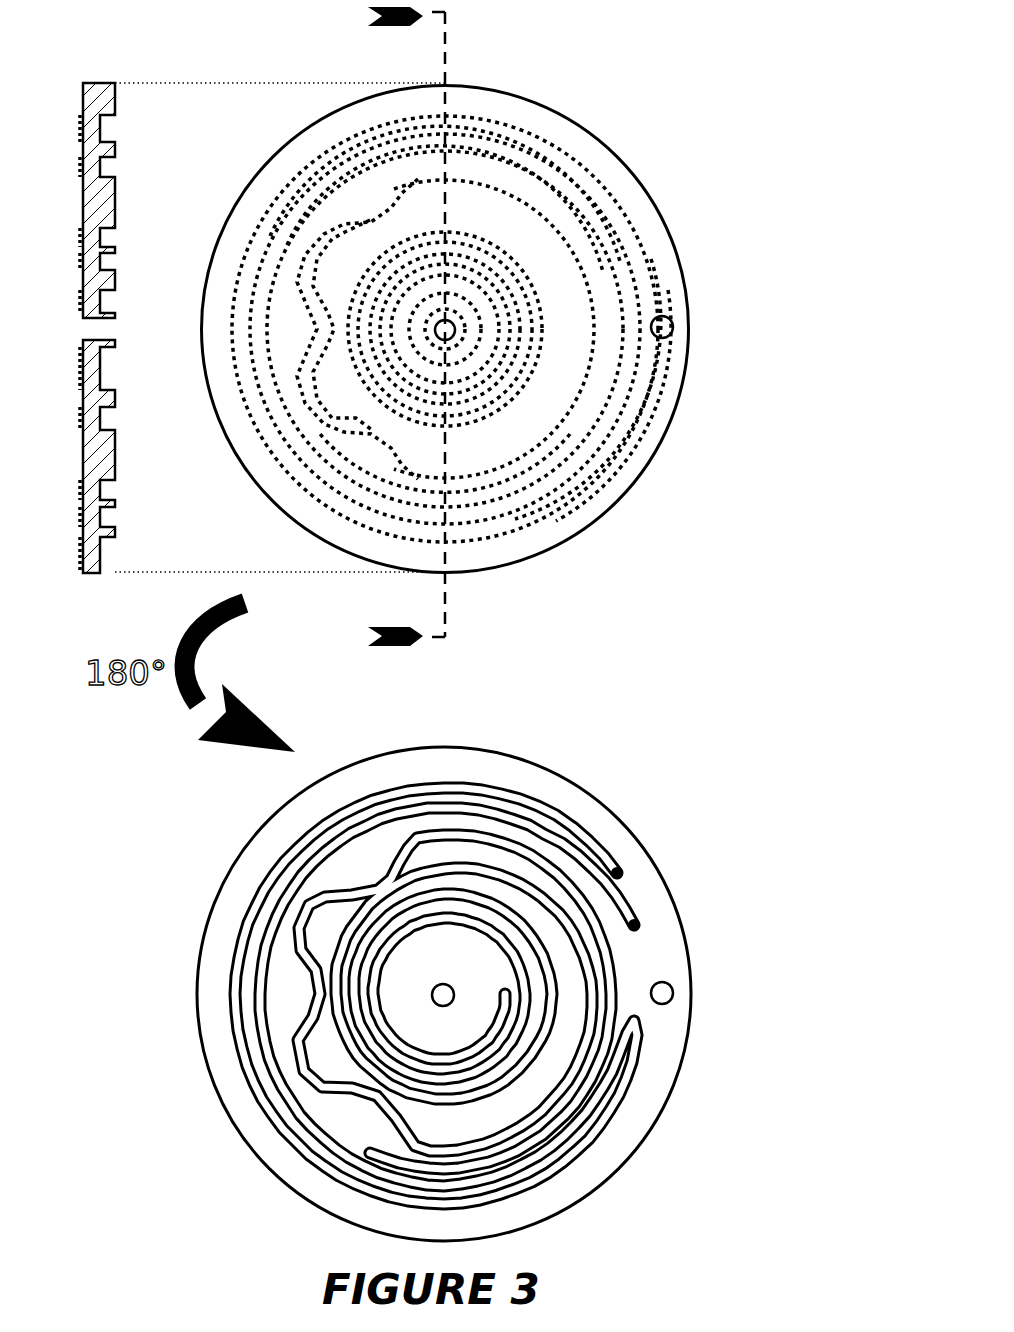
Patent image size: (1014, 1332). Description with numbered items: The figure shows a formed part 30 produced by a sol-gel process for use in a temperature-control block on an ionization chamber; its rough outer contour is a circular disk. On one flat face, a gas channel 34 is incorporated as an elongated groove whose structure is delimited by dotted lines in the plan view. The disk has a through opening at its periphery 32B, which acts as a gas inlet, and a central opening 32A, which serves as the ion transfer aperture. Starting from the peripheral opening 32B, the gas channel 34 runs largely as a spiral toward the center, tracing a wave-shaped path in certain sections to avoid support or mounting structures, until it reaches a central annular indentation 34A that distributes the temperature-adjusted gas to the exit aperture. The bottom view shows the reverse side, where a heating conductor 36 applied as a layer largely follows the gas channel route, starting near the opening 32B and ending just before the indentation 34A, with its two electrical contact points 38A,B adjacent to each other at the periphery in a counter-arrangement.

The formed part 30 is at (445, 329).
The central opening 32A is at (455, 340).
The opening on the periphery 32B is at (669, 663).
The gas channel 34 is at (507, 523).
The central annular indentation 34A is at (464, 302).
The heating conductor 36 is at (78, 228).
The electrical contact points 38A,B is at (635, 923).